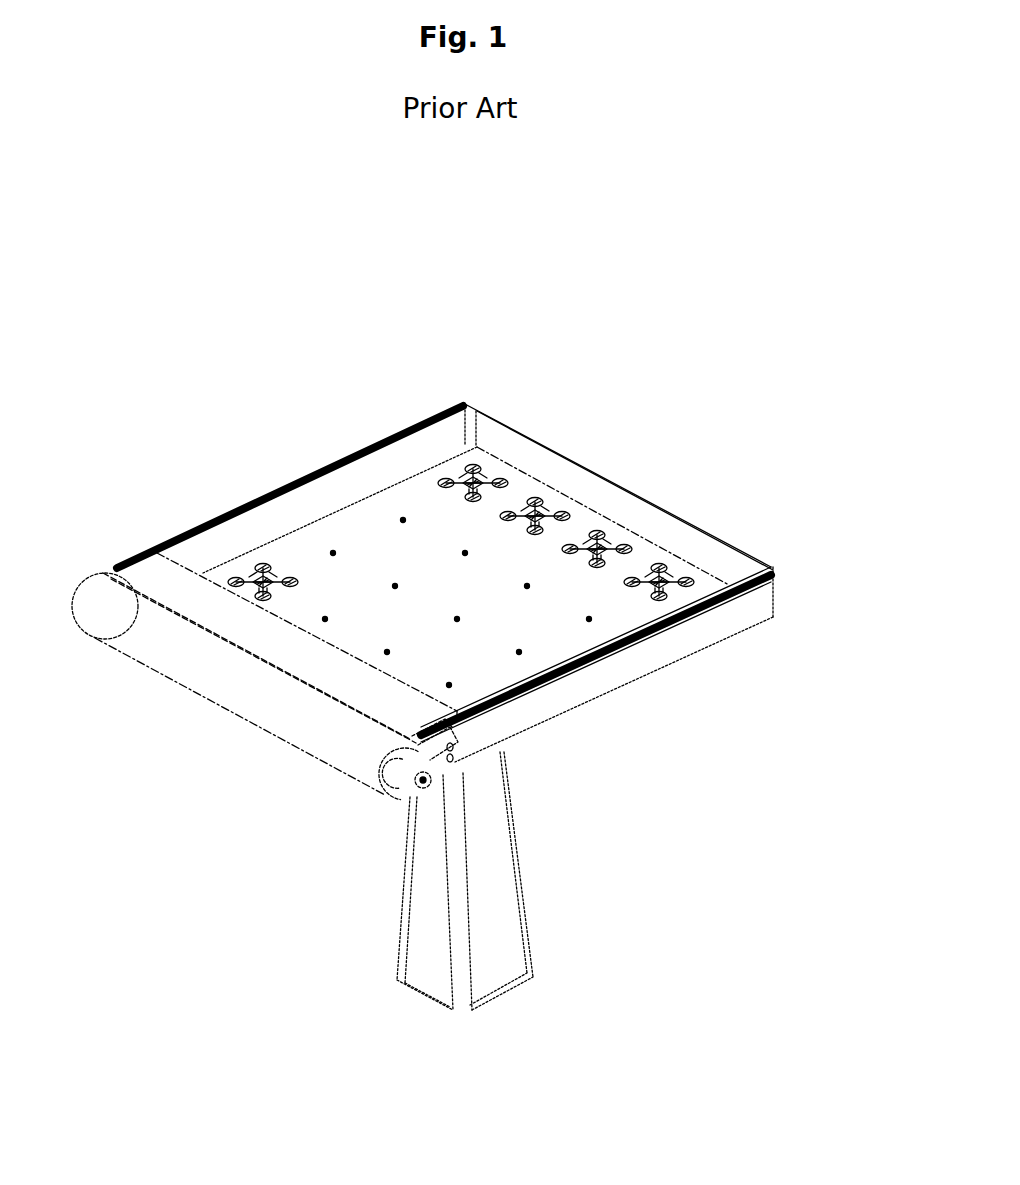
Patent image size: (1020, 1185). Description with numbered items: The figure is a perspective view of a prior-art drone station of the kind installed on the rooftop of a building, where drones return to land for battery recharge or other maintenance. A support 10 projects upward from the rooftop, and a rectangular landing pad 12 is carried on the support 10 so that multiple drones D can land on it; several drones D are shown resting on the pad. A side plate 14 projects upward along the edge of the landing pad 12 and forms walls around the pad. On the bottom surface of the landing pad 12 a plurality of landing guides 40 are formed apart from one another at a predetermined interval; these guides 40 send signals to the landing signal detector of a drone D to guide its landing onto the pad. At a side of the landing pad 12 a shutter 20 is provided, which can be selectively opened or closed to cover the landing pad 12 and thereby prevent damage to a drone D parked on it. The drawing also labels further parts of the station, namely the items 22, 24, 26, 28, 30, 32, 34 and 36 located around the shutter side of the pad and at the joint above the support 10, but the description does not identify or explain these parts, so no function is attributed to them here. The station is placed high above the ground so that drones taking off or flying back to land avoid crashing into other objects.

The support 10 is at (527, 910).
The landing pad 12 is at (410, 503).
The side plate 14 is at (440, 435).
The shutter 20 is at (120, 668).
The bracket 22 is at (463, 751).
The hinge 24 is at (372, 783).
The hinge pin 26 is at (380, 770).
The roller 28 is at (153, 573).
The bolt 30 is at (408, 790).
The lower rail 32 is at (267, 710).
The guide rail 34 is at (137, 595).
The rail 36 is at (207, 521).
The landing guides 40 is at (333, 553).
The drone D is at (553, 500).